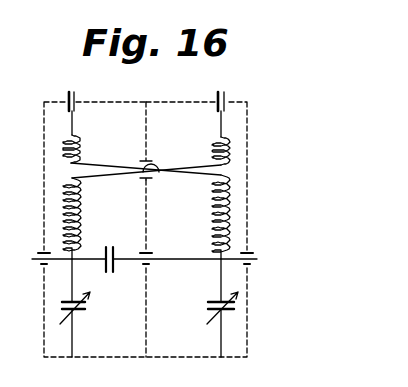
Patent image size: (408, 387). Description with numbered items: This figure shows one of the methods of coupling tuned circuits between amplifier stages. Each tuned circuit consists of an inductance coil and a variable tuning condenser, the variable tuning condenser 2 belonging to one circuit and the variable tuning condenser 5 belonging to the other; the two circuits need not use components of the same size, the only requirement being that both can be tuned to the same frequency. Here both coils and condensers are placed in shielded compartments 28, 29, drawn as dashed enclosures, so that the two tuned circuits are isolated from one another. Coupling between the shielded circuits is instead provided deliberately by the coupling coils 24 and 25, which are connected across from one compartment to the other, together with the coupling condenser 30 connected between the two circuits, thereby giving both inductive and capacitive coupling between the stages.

The coupling coil 24 is at (79, 153).
The coupling coil 25 is at (229, 154).
The coupling condenser 30 is at (108, 274).
The variable tuning condenser 2 is at (85, 311).
The variable tuning condenser 5 is at (226, 311).
The shielded compartment 28 is at (90, 344).
The shielded compartment 29 is at (198, 344).